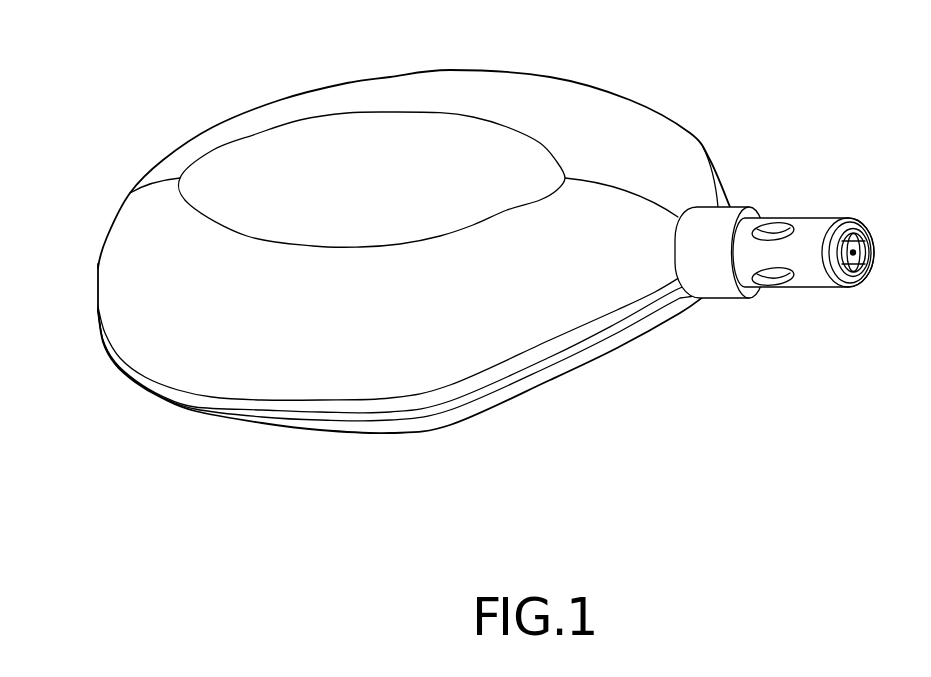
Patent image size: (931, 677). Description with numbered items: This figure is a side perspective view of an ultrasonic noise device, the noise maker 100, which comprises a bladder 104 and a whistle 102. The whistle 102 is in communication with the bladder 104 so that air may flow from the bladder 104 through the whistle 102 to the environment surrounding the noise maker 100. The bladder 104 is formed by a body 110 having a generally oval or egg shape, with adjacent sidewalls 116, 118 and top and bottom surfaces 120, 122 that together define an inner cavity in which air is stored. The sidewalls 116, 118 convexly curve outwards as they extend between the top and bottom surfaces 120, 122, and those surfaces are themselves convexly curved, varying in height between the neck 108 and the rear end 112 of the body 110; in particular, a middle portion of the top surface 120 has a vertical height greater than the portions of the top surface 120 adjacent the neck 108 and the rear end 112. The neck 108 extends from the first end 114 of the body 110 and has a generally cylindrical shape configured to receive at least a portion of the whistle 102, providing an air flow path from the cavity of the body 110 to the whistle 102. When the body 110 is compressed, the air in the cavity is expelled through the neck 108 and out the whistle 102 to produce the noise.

The noise maker 100 is at (454, 257).
The whistle 102 is at (803, 218).
The bladder 104 is at (460, 72).
The neck 108 is at (727, 298).
The body 110 is at (393, 353).
The rear end 112 is at (98, 282).
The first end 114 is at (757, 290).
The sidewall 116 is at (243, 415).
The sidewall 118 is at (550, 78).
The top surface 120 is at (385, 125).
The bottom surface 122 is at (458, 430).